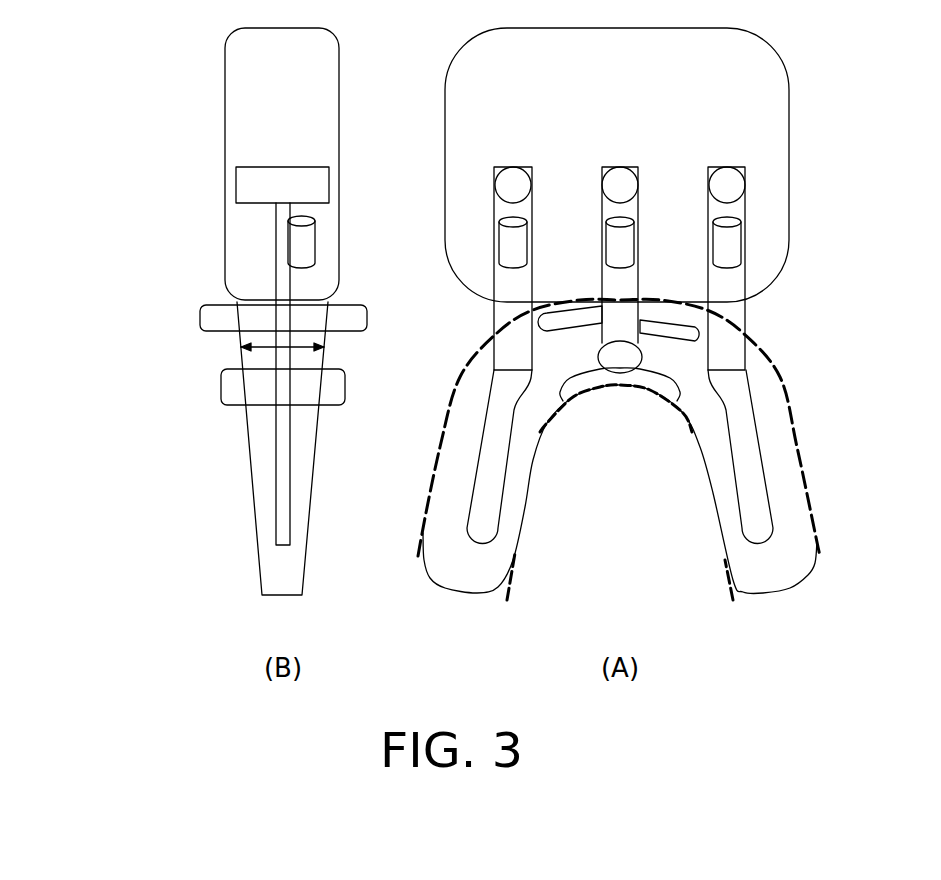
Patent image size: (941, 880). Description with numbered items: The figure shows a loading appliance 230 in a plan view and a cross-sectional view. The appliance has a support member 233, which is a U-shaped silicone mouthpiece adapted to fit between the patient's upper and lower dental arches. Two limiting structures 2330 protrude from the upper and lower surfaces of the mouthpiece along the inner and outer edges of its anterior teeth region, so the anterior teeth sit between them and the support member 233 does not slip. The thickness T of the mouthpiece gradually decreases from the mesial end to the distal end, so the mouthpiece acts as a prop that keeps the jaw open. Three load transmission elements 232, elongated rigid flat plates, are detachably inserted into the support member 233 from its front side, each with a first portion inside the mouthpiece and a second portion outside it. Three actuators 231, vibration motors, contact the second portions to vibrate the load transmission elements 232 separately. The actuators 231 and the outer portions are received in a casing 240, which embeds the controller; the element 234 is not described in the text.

The loading appliance 230 is at (128, 222).
The actuator 231 is at (297, 242).
The load transmission element 232 is at (283, 466).
The support member 233 is at (257, 520).
The positioning element 234 is at (250, 186).
The casing 240 is at (225, 79).
The limiting structure 2330 is at (232, 385).
The thickness T is at (280, 350).